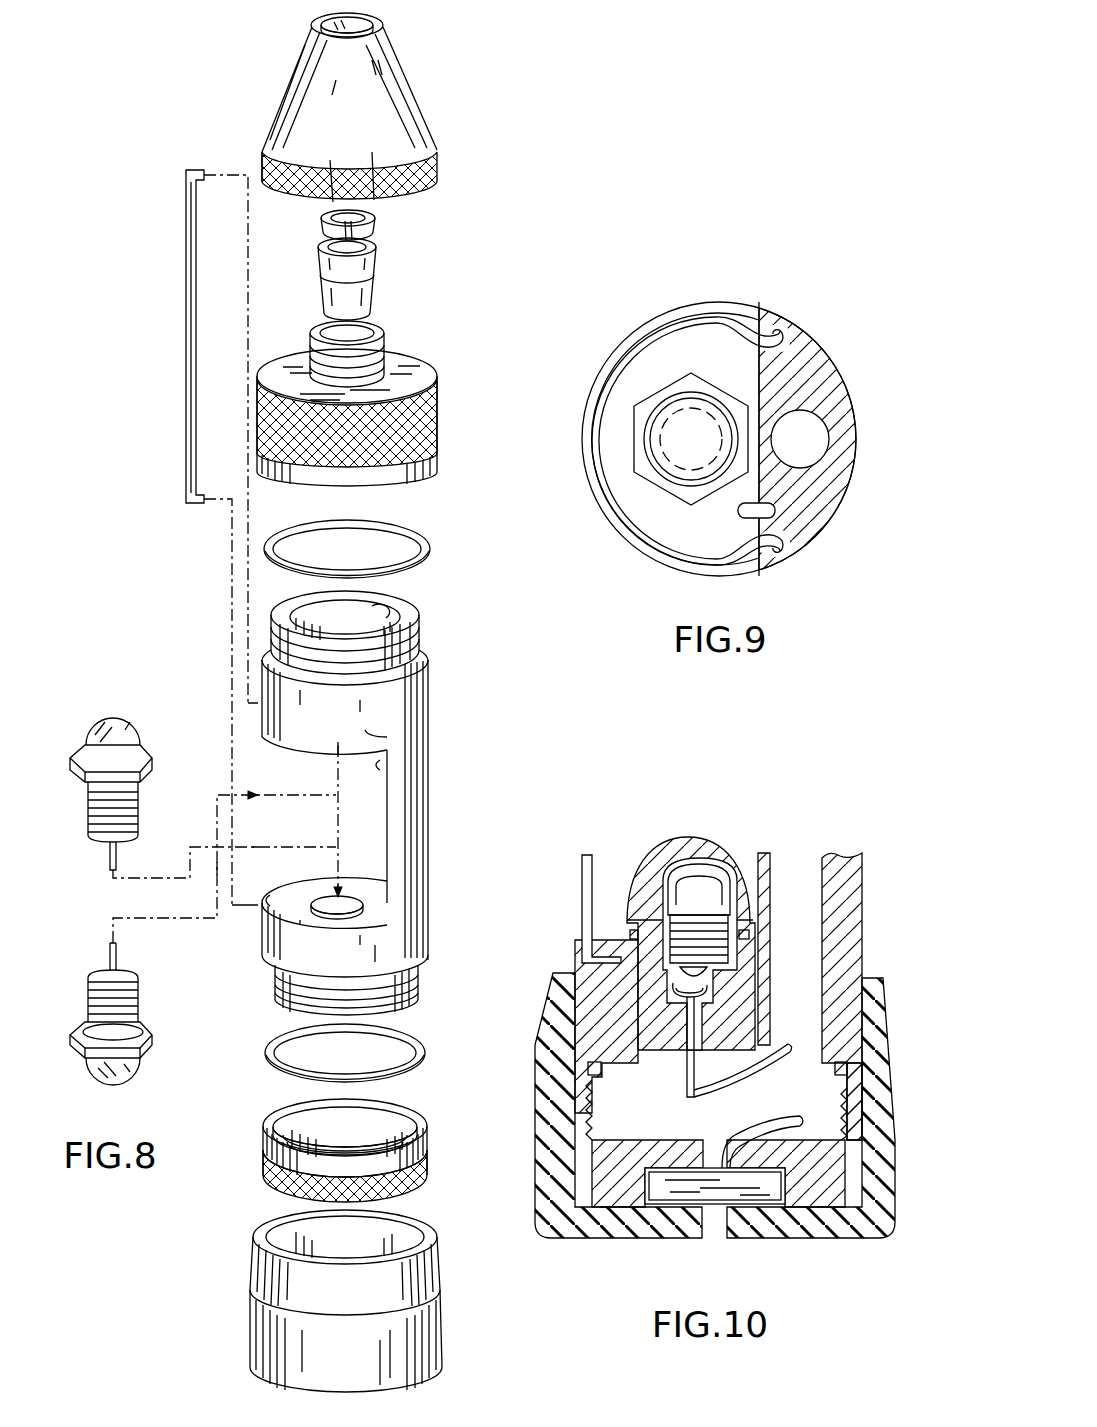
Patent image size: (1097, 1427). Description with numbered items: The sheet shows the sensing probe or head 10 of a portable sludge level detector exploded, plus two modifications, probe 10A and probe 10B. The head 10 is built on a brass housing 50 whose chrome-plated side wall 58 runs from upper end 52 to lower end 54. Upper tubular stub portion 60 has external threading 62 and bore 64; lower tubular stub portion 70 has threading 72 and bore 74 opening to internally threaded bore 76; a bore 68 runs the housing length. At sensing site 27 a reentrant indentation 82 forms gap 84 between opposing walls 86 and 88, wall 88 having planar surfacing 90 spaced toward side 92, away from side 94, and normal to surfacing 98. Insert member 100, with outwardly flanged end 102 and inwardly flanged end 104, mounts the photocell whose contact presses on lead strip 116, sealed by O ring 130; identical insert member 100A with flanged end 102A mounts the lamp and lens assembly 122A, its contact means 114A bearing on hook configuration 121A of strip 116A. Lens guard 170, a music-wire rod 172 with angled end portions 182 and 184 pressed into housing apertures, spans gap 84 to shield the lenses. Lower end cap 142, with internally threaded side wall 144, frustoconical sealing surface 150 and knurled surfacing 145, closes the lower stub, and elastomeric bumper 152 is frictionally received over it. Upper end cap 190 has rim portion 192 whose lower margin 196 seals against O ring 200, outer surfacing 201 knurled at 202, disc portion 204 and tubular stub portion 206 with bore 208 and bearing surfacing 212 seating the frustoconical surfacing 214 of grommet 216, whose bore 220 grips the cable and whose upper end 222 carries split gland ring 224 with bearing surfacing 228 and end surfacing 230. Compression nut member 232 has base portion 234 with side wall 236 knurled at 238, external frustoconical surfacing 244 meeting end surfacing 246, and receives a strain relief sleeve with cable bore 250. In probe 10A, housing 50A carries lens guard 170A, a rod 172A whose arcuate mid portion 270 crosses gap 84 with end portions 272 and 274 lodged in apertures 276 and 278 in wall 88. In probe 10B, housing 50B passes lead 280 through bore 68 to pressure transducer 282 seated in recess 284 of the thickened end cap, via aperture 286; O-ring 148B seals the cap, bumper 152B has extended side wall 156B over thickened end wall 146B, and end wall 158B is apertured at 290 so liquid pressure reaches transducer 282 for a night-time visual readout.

In FIG. 8, the sensing probe or head 10 is at (506, 186).
In FIG. 9, the probe 10A is at (814, 228).
In FIG. 10, the probe 10B is at (904, 874).
In FIG. 8, the sensing site 27 is at (262, 765).
In FIG. 8, the housing 50 is at (375, 809).
In FIG. 9, the housing 50A is at (800, 345).
In FIG. 10, the housing 50B is at (880, 962).
In FIG. 8, the upper end 52 is at (366, 690).
In FIG. 8, the lower end 54 is at (337, 964).
In FIG. 10, the lower end 54 is at (715, 1056).
In FIG. 8, the cylindrical peripheral side wall 58 is at (392, 823).
In FIG. 8, the tubular stub portion 60 is at (420, 632).
In FIG. 8, the external threading 62 is at (426, 650).
In FIG. 8, the bore 64 is at (303, 606).
In FIG. 9, the bore 68 is at (830, 440).
In FIG. 10, the bore 68 is at (823, 857).
In FIG. 8, the tubular stub portion 70 is at (420, 1000).
In FIG. 10, the tubular stub portion 70 is at (594, 1069).
In FIG. 8, the external threading 72 is at (425, 985).
In FIG. 10, the external threading 72 is at (588, 1100).
In FIG. 10, the bore 74 is at (606, 1112).
In FIG. 10, the internally threaded bore 76 is at (700, 1002).
In FIG. 8, the reentrant indentation 82 is at (482, 755).
In FIG. 8, the gap 84 is at (381, 848).
In FIG. 9, the gap 84 is at (740, 300).
In FIG. 8, the housing wall 86 is at (372, 737).
In FIG. 8, the planar wall 88 is at (390, 829).
In FIG. 9, the planar wall 88 is at (762, 380).
In FIG. 8, the planar wall surfacing 90 is at (374, 795).
In FIG. 9, the planar wall surfacing 90 is at (776, 510).
In FIG. 8, the side 92 is at (464, 766).
In FIG. 8, the head side 94 is at (250, 990).
In FIG. 8, the planar surfacing 98 is at (323, 918).
In FIG. 8, the insert member 100 is at (102, 1017).
In FIG. 8, the insert member 100A is at (98, 770).
In FIG. 8, the outwardly flanged end 102 is at (76, 1040).
In FIG. 8, the outwardly flanged end 102A is at (76, 745).
In FIG. 8, the inwardly flanged end 104 is at (103, 965).
In FIG. 10, the electrical contact means 114A is at (706, 950).
In FIG. 8, the lead strip 116 is at (118, 950).
In FIG. 8, the contact strip 116A is at (110, 862).
In FIG. 10, the hook configuration 121A is at (706, 997).
In FIG. 8, the lens assembly 122A is at (127, 712).
In FIG. 8, the O ring seal 130 is at (141, 1049).
In FIG. 8, the lower end cap 142 is at (351, 1139).
In FIG. 8, the internally threaded side wall portion 144 is at (394, 1112).
In FIG. 8, the external surfacing 145 is at (428, 1183).
In FIG. 10, the thickened end wall 146B is at (836, 1194).
In FIG. 10, the O-ring seal 148B is at (870, 1160).
In FIG. 8, the annular frustoconical sealing surface 150 is at (271, 1125).
In FIG. 8, the elastomeric bumper or boot 152 is at (420, 1362).
In FIG. 10, the bumper or boot 152B is at (720, 1130).
In FIG. 10, the side wall 156B is at (880, 1122).
In FIG. 10, the end wall 158B is at (812, 1240).
In FIG. 8, the lens guard 170 is at (150, 356).
In FIG. 9, the lens guard 170A is at (734, 414).
In FIG. 8, the upstanding rod or bar 172 is at (182, 260).
In FIG. 9, the rod or wire 172A is at (642, 345).
In FIG. 8, the end portion 182 is at (200, 172).
In FIG. 8, the end portion 184 is at (197, 506).
In FIG. 8, the upper end cap 190 is at (406, 386).
In FIG. 8, the lower rim portion 192 is at (304, 474).
In FIG. 8, the lower margin 196 is at (436, 456).
In FIG. 8, the O ring seal 200 is at (431, 549).
In FIG. 8, the outer surfacing 201 is at (438, 477).
In FIG. 8, the knurling 202 is at (438, 410).
In FIG. 8, the disc portion 204 is at (420, 378).
In FIG. 8, the tubular stub portion 206 is at (386, 344).
In FIG. 8, the bore 208 is at (318, 336).
In FIG. 8, the frustoconical bearing surfacing 212 is at (378, 326).
In FIG. 8, the frustoconical surfacing 214 is at (371, 290).
In FIG. 8, the grommet 216 is at (374, 268).
In FIG. 8, the bore 220 is at (378, 246).
In FIG. 8, the annular upper end 222 is at (319, 255).
In FIG. 8, the split gland ring 224 is at (324, 230).
In FIG. 8, the frustoconical bearing surfacing 228 is at (374, 200).
In FIG. 8, the upper end annular bearing surfacing 230 is at (333, 202).
In FIG. 8, the compression nut member 232 is at (408, 54).
In FIG. 8, the base portion 234 is at (436, 162).
In FIG. 8, the annular cylindrical side wall 236 is at (266, 142).
In FIG. 8, the knurling 238 is at (260, 162).
In FIG. 8, the external frustoconical surfacing 244 is at (408, 88).
In FIG. 8, the end surfacing 246 is at (374, 27).
In FIG. 8, the bore 250 is at (322, 28).
In FIG. 9, the arcuate mid portion 270 is at (668, 548).
In FIG. 9, the end portion 272 is at (761, 325).
In FIG. 9, the end portion 274 is at (770, 556).
In FIG. 9, the mounting aperture 276 is at (790, 366).
In FIG. 9, the mounting aperture 278 is at (782, 540).
In FIG. 10, the additional lead 280 is at (792, 1132).
In FIG. 10, the pressure transducer 282 is at (691, 1202).
In FIG. 10, the recess 284 is at (662, 1152).
In FIG. 10, the aperture 286 is at (580, 1232).
In FIG. 10, the aperture 290 is at (723, 1226).